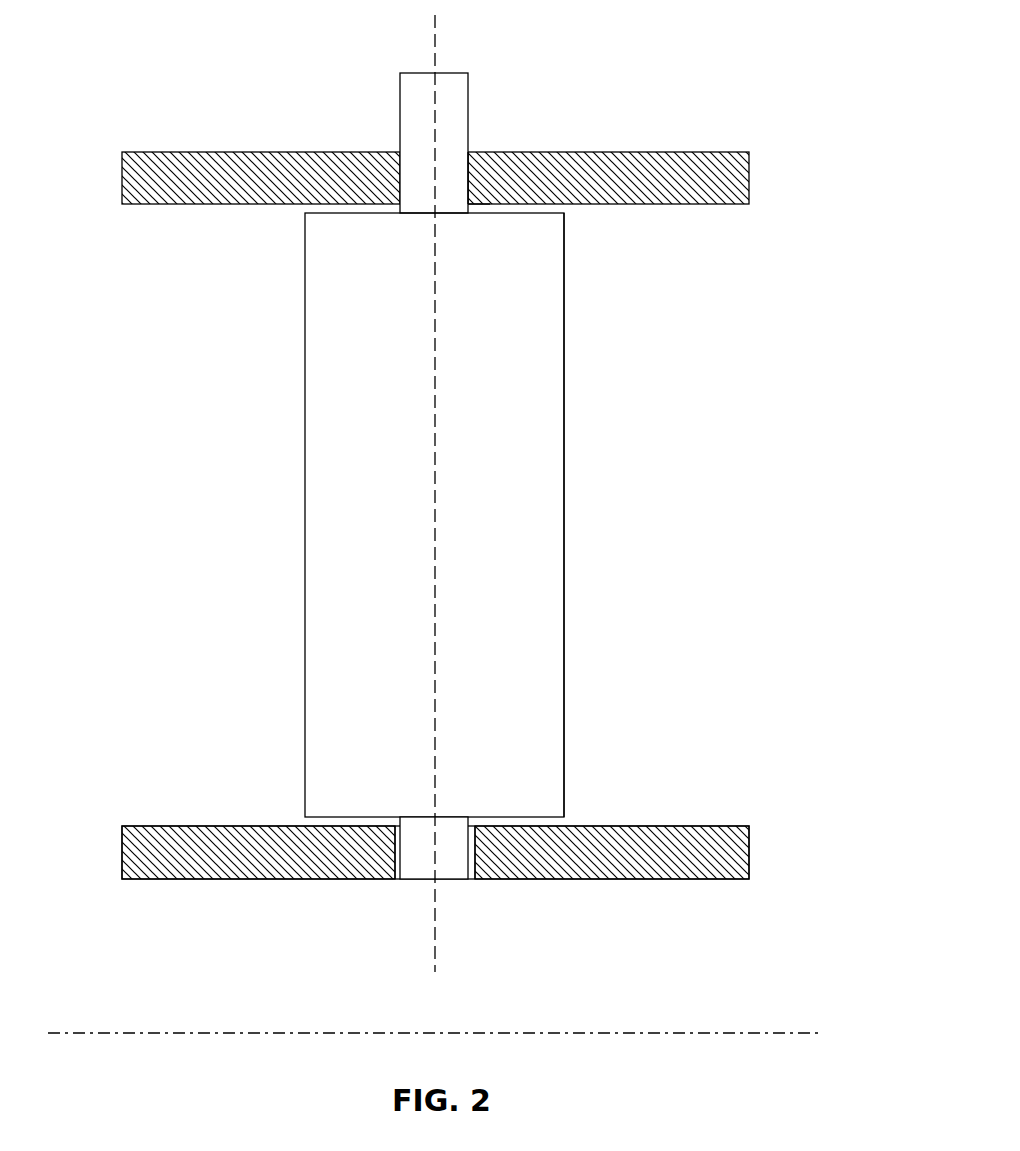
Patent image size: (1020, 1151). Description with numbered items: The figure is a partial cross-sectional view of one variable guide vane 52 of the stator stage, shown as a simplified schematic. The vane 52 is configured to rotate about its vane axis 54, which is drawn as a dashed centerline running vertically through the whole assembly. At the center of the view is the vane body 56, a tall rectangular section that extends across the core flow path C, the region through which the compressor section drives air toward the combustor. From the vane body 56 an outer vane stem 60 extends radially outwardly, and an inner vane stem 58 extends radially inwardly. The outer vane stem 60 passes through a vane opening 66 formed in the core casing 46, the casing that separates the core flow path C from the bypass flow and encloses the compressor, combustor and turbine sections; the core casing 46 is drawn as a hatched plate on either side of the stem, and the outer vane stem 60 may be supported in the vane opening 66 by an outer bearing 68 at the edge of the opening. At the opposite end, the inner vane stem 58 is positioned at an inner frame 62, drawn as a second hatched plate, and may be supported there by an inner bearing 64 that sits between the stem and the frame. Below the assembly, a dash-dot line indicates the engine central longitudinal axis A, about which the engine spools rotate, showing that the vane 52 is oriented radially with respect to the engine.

The core casing 46 is at (693, 160).
The variable guide vane 52 is at (315, 587).
The vane axis 54 is at (432, 50).
The vane body 56 is at (556, 390).
The inner vane stem 58 is at (447, 870).
The outer vane stem 60 is at (410, 118).
The inner frame 62 is at (708, 862).
The inner bearing 64 is at (396, 879).
The vane opening 66 is at (476, 178).
The outer bearing 68 is at (470, 152).
The core flow path C is at (255, 434).
The engine central longitudinal axis A is at (122, 1032).